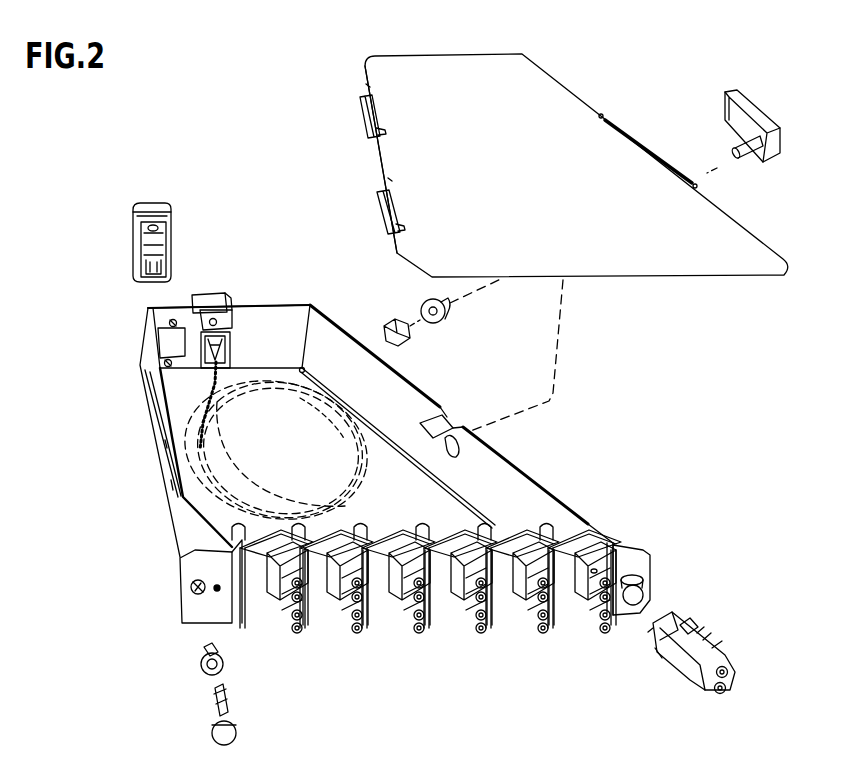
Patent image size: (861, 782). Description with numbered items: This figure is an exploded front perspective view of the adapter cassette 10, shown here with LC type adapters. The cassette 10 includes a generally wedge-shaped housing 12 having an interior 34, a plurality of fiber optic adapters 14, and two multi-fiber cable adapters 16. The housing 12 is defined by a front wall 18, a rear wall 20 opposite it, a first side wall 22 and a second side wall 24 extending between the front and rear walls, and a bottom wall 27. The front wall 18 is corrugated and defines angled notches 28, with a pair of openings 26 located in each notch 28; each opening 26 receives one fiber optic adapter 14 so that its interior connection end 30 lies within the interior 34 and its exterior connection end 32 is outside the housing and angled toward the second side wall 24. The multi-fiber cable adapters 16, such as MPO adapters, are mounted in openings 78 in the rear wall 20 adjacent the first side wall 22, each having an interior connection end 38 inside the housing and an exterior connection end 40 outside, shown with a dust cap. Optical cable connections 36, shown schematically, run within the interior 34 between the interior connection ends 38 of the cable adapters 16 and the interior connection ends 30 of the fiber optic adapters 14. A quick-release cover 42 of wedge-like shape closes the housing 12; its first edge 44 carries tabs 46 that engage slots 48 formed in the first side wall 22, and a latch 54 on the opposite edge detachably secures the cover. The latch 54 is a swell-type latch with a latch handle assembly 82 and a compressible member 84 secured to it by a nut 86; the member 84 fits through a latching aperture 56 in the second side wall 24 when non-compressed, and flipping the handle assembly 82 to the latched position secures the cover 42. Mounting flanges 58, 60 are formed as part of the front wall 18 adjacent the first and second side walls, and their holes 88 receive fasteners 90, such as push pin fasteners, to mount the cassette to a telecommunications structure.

The adapter cassette 10 is at (85, 143).
The housing 12 is at (115, 423).
The fiber optic adapters 14 is at (460, 645).
The multi-fiber cable adapter 16 is at (177, 193).
The front wall 18 is at (487, 603).
The rear wall 20 is at (262, 312).
The first side wall 22 is at (170, 508).
The second side wall 24 is at (538, 503).
The openings 26 is at (572, 575).
The bottom wall 27 is at (365, 437).
The angled notches 28 is at (460, 545).
The interior connection end 30 is at (353, 527).
The exterior connection end 32 is at (323, 613).
The interior 34 is at (295, 448).
The optical cable connections 36 is at (332, 412).
The interior connection end 38 is at (229, 351).
The exterior connection end 40 is at (147, 210).
The quick-release cover 42 is at (537, 98).
The first edge 44 is at (378, 158).
The tabs 46 is at (360, 98).
The slots 48 is at (158, 355).
The latch 54 is at (765, 82).
The latching aperture 56 is at (453, 452).
The mounting flange 58 is at (203, 610).
The mounting flange 60 is at (640, 562).
The openings 78 is at (170, 345).
The latch handle assembly 82 is at (772, 148).
The compressible member 84 is at (424, 305).
The nut 86 is at (392, 323).
The holes 88 is at (190, 590).
The fasteners 90 is at (214, 716).